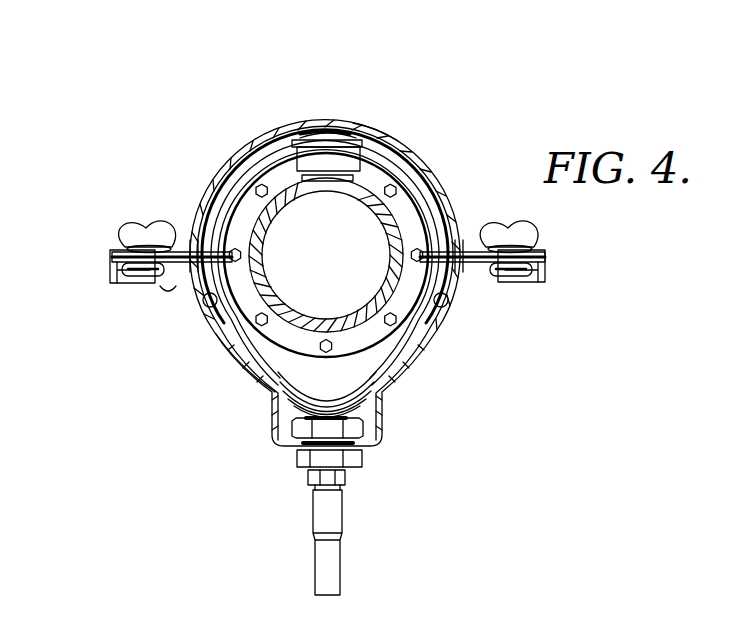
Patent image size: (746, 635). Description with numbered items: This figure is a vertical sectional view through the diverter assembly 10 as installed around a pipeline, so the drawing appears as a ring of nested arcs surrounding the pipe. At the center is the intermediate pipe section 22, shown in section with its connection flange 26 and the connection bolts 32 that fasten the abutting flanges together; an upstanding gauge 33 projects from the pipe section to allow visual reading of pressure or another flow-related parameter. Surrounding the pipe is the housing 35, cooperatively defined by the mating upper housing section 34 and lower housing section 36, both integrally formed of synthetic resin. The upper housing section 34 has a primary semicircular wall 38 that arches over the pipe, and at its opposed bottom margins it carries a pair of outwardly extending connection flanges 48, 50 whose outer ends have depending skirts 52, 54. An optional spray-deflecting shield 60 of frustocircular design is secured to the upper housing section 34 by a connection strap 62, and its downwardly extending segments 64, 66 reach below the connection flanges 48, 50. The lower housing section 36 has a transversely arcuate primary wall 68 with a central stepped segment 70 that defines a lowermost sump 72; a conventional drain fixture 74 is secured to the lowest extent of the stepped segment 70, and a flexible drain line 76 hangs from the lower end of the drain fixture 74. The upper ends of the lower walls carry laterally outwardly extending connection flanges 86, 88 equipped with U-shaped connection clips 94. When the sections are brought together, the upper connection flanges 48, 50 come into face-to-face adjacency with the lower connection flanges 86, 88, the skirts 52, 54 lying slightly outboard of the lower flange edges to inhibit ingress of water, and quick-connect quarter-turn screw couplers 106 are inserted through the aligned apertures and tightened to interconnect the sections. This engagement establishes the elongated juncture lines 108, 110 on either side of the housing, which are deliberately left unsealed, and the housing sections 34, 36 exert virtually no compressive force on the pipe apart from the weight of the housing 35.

The diverter assembly 10 is at (126, 130).
The intermediate pipe section 22 is at (283, 312).
The connection flange 26 is at (407, 215).
The connection bolts 32 is at (396, 188).
The gauge 33 is at (300, 165).
The upper housing section 34 is at (418, 136).
The housing 35 is at (288, 96).
The lower housing section 36 is at (208, 350).
The primary semicircular wall 38 is at (295, 133).
The connection flange 48 is at (468, 250).
The connection flange 50 is at (185, 245).
The skirt 52 is at (548, 278).
The skirt 54 is at (112, 280).
The spray-deflecting shield 60 is at (452, 208).
The connection strap 62 is at (385, 130).
The downwardly extending segment 64 is at (438, 320).
The downwardly extending segment 66 is at (206, 310).
The primary wall 68 is at (433, 343).
The stepped segment 70 is at (362, 405).
The sump 72 is at (287, 423).
The drain fixture 74 is at (300, 457).
The flexible drain line 76 is at (328, 553).
The connection flange 86 is at (470, 267).
The connection flange 88 is at (168, 290).
The U-shaped connection clips 94 is at (130, 278).
The quick-connect screw couplers 106 is at (130, 228).
The juncture line 108 is at (530, 266).
The juncture line 110 is at (110, 255).